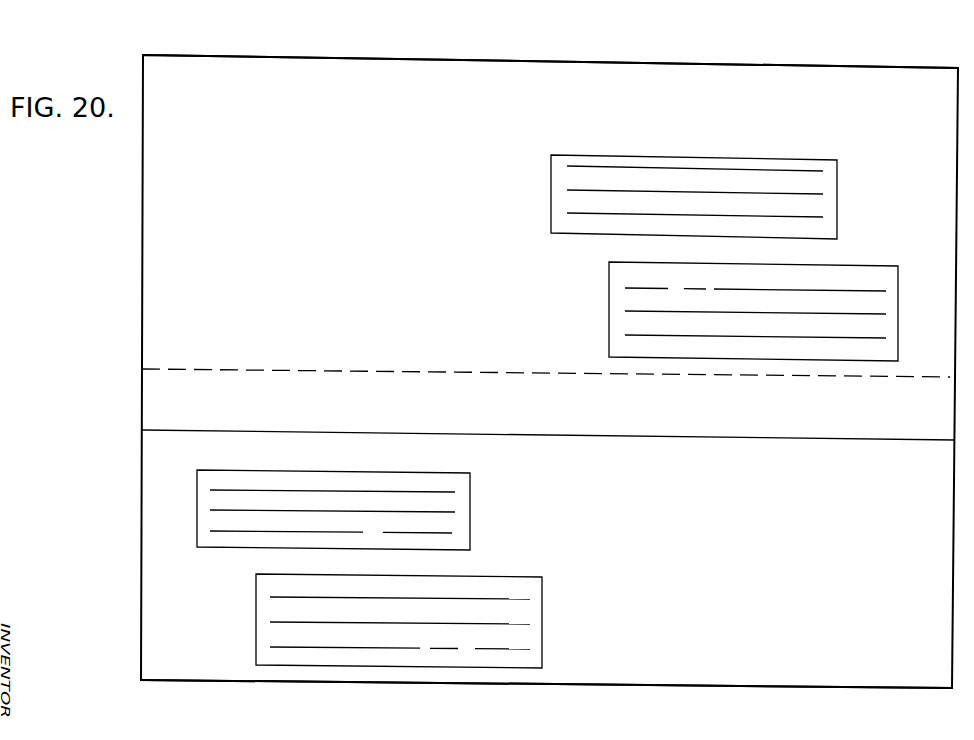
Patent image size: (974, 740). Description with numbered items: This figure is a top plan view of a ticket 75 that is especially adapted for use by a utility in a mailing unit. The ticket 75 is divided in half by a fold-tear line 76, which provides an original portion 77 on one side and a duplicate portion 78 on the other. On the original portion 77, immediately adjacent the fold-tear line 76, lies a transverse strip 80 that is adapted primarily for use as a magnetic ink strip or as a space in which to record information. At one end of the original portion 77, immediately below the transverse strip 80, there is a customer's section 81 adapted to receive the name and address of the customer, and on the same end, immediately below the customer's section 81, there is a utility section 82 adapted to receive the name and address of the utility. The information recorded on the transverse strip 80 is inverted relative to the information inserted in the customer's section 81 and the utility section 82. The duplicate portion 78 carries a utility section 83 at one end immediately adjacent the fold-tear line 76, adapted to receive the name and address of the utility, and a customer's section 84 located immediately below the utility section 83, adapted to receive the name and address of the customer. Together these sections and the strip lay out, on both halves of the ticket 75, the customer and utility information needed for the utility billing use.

The ticket 75 is at (134, 211).
The fold-tear line 76 is at (216, 369).
The original portion 77 is at (641, 688).
The duplicate portion 78 is at (380, 57).
The transverse strip 80 is at (680, 437).
The customer's section 81 is at (470, 485).
The utility section 82 is at (542, 604).
The utility section 83 is at (609, 306).
The customer's section 84 is at (551, 176).